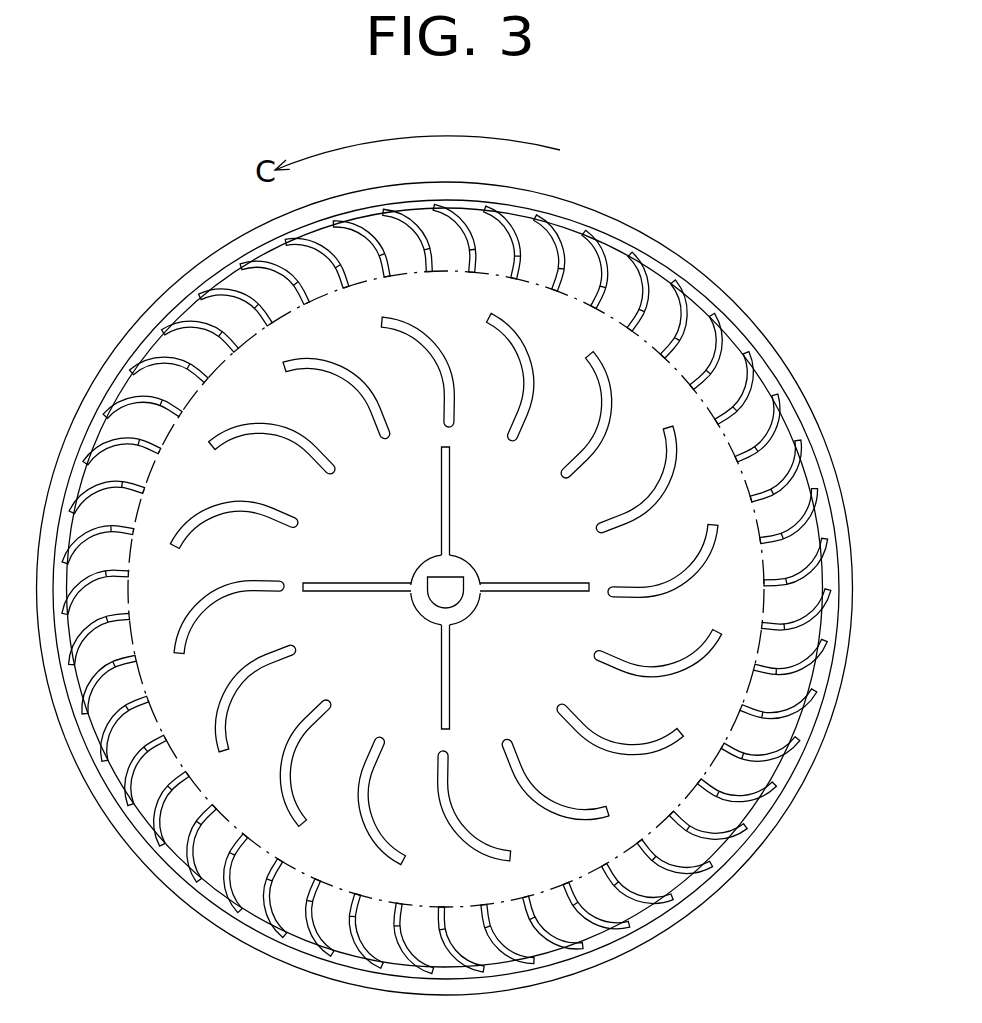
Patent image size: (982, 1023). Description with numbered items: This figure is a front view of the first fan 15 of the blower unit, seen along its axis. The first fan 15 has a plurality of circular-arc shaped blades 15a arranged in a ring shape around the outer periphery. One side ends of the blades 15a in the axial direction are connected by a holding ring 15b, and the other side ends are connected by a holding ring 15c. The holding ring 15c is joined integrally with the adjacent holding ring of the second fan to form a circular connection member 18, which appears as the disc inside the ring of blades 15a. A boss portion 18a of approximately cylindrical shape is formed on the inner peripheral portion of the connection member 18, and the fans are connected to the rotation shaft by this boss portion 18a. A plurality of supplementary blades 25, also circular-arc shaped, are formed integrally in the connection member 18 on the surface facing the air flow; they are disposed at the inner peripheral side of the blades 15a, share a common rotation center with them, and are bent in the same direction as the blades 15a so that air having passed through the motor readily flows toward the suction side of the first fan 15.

The first fan 15 is at (782, 347).
The blades 15a is at (650, 297).
The holding ring 15b is at (622, 250).
The holding ring 15c is at (740, 308).
The connection member 18 is at (678, 492).
The boss portion 18a is at (460, 604).
The supplementary blades 25 is at (237, 428).